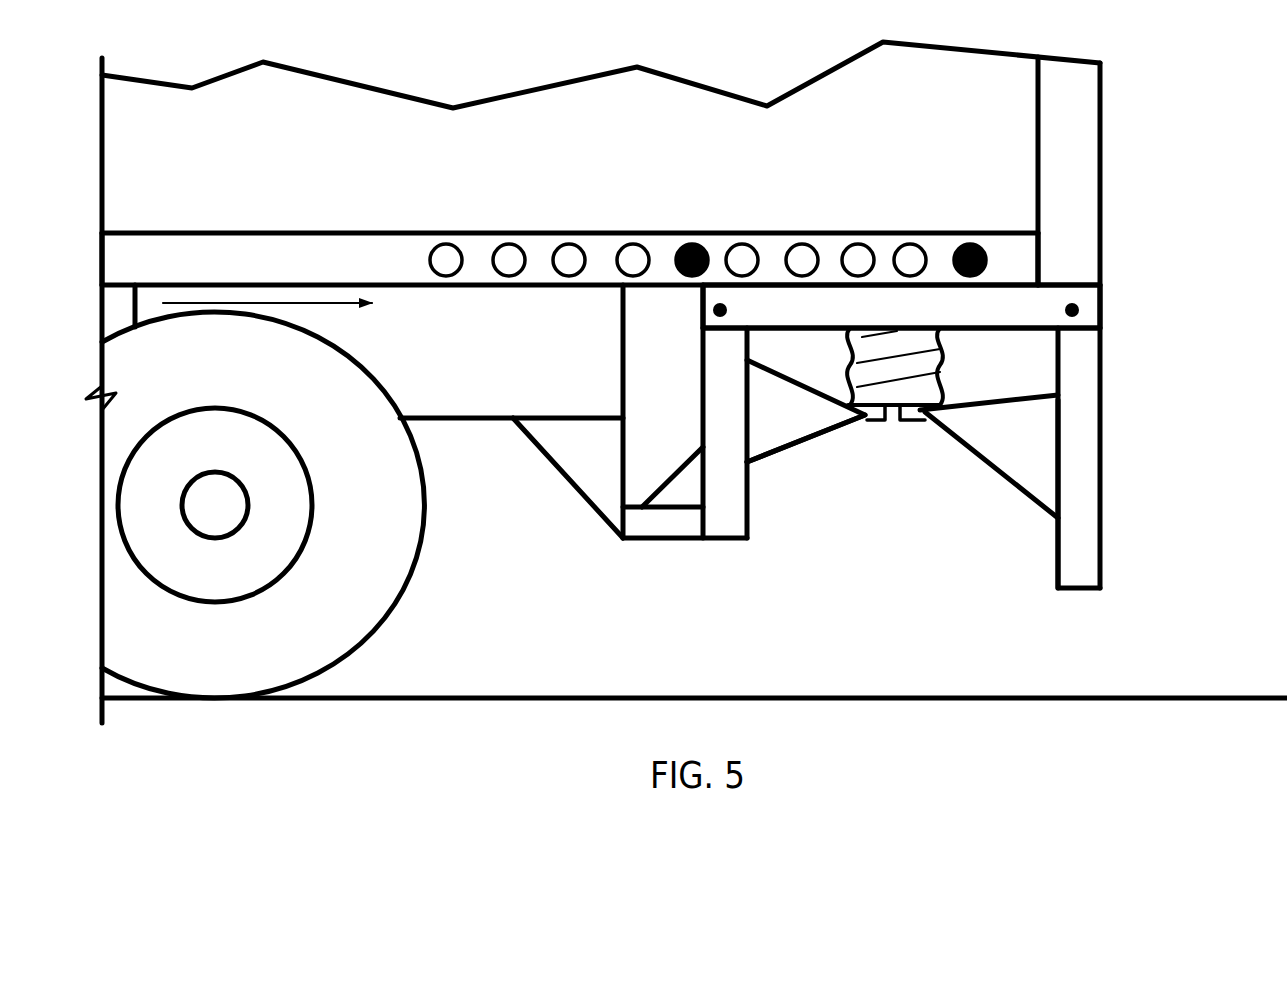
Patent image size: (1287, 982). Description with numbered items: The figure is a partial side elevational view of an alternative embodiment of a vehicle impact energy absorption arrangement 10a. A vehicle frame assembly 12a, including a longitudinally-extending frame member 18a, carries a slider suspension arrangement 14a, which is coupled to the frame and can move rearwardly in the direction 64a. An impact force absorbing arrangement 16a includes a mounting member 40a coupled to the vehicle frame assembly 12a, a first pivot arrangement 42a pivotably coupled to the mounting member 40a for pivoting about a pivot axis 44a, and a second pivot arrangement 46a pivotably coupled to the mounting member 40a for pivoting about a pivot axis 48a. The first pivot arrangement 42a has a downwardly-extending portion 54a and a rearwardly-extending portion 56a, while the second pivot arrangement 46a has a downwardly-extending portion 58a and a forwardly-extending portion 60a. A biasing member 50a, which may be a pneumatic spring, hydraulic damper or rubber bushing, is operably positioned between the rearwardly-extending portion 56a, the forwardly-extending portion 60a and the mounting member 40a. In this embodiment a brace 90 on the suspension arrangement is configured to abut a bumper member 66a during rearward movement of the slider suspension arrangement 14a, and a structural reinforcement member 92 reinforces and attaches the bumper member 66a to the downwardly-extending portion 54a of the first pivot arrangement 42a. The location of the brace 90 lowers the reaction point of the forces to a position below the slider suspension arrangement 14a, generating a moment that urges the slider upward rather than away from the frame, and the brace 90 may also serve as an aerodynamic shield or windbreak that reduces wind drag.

The vehicle impact energy absorption arrangement 10a is at (623, 575).
The vehicle frame assembly 12a is at (461, 228).
The slider suspension arrangement 14a is at (482, 428).
The impact force absorbing arrangement 16a is at (1112, 303).
The frame member 18a is at (392, 257).
The mounting member 40a is at (1100, 320).
The first pivot arrangement 42a is at (775, 468).
The pivot axis 44a is at (728, 309).
The second pivot arrangement 46a is at (1112, 531).
The pivot axis 48a is at (1080, 302).
The biasing member 50a is at (958, 368).
The downwardly-extending portion 54a is at (733, 520).
The rearwardly-extending portion 56a is at (815, 417).
The downwardly-extending portion 58a is at (1087, 494).
The forwardly-extending portion 60a is at (1000, 447).
The direction 64a is at (287, 302).
The bumper member 66a is at (667, 530).
The brace 90 is at (585, 477).
The structural reinforcement member 92 is at (685, 478).